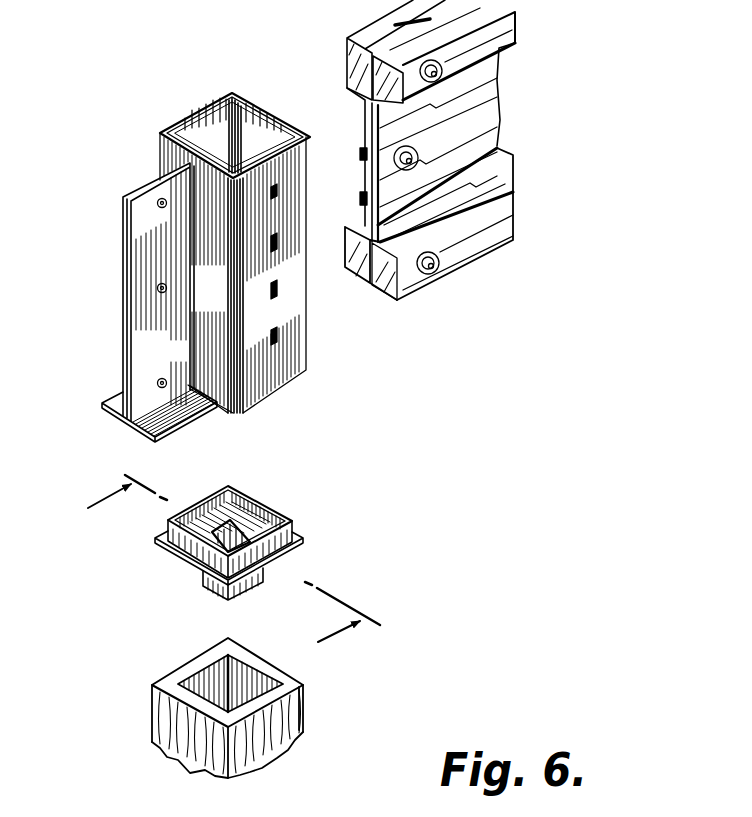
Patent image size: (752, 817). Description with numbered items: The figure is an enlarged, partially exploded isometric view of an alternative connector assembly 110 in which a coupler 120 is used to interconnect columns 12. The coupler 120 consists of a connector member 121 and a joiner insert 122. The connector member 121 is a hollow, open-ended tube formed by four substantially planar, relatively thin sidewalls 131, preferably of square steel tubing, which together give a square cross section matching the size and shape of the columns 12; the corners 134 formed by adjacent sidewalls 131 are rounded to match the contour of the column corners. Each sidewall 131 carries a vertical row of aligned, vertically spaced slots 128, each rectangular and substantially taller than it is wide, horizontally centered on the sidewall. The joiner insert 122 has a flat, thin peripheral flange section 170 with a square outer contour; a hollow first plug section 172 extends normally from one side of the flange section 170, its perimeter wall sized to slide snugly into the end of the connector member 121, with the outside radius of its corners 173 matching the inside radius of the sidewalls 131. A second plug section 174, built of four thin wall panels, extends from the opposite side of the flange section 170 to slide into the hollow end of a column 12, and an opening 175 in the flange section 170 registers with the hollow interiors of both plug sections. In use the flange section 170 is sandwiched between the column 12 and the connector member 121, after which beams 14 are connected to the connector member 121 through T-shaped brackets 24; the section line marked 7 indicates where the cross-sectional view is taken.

The connector assembly 110 is at (650, 50).
The coupler 120 is at (117, 127).
The connector member 121 is at (310, 287).
The sidewalls 131 is at (168, 160).
The corners 134 is at (232, 92).
The slots 128 is at (278, 193).
The T-shaped brackets 24 is at (124, 262).
The beams 14 is at (483, 120).
The joiner insert 122 is at (248, 478).
The first plug section 172 is at (266, 502).
The corners of the perimeter wall 173 is at (292, 522).
The flange section 170 is at (305, 540).
The opening 175 is at (250, 557).
The second plug section 174 is at (205, 580).
The columns 12 is at (298, 713).
The section line 7- 7 is at (221, 575).